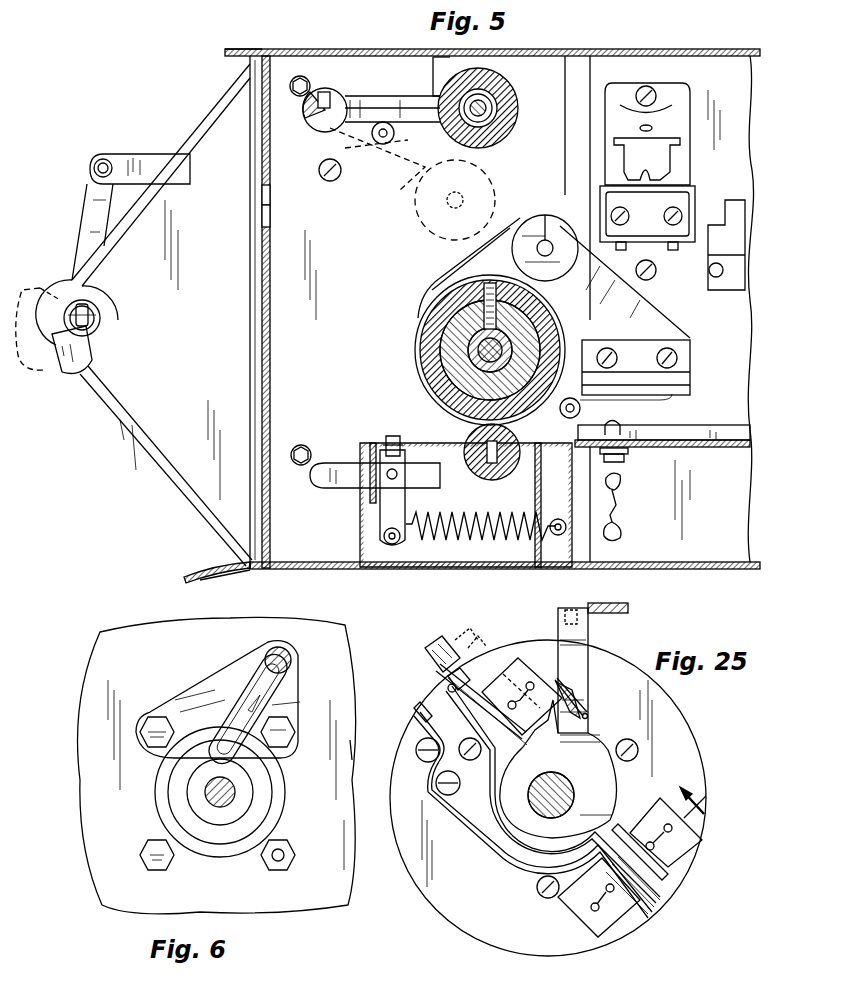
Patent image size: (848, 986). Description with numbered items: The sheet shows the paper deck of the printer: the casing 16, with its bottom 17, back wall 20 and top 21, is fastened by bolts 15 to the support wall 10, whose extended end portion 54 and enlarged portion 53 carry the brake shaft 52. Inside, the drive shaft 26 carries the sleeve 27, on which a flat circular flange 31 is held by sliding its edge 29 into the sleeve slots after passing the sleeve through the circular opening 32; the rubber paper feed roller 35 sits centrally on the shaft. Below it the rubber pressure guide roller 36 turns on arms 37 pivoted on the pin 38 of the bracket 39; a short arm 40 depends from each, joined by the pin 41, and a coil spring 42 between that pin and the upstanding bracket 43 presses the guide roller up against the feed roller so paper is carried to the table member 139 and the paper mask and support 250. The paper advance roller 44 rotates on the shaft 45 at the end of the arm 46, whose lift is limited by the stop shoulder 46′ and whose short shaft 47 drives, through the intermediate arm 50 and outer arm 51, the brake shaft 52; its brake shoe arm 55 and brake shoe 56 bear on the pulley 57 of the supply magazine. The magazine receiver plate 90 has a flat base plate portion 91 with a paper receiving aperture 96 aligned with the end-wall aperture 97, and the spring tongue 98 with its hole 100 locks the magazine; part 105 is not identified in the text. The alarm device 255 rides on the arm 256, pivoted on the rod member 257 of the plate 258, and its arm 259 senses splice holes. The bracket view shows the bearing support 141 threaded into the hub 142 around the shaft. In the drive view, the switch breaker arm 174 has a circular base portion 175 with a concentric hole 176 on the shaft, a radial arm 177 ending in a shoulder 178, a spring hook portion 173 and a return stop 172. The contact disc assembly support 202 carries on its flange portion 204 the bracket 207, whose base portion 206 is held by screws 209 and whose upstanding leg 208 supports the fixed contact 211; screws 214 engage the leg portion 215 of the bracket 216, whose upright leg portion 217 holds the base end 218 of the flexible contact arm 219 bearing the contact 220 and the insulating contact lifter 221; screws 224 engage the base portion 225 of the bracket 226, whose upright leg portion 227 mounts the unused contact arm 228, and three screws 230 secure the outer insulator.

In FIG. 5, the support wall 10 is at (160, 458).
In FIG. 5, the bolts 15 is at (304, 84).
In FIG. 5, the casing 16 is at (620, 50).
In FIG. 6, the casing 16 is at (72, 821).
In FIG. 5, the bottom 17 is at (690, 569).
In FIG. 5, the back wall 20 is at (337, 275).
In FIG. 6, the back wall 20 is at (352, 748).
In FIG. 5, the top 21 is at (688, 49).
In FIG. 5, the drive shaft 26 is at (466, 360).
In FIG. 6, the drive shaft 26 is at (205, 794).
In FIG. 25, the drive shaft 26 is at (574, 790).
In FIG. 5, the sleeve 27 is at (460, 368).
In FIG. 25, the sleeve 27 is at (453, 778).
In FIG. 5, the edge 29 is at (30, 40).
In FIG. 5, the flat circular flange 31 is at (415, 315).
In FIG. 5, the circular opening 32 is at (458, 400).
In FIG. 5, the rubber paper feed roller 35 is at (422, 348).
In FIG. 5, the rubber pressure guide roller 36 is at (512, 466).
In FIG. 5, the arms 37 is at (485, 484).
In FIG. 5, the pin 38 is at (399, 476).
In FIG. 5, the bracket 39 is at (404, 446).
In FIG. 5, the short arm 40 is at (388, 518).
In FIG. 5, the pin 41 is at (390, 546).
In FIG. 5, the coil spring 42 is at (460, 540).
In FIG. 5, the upstanding bracket 43 is at (556, 518).
In FIG. 5, the paper advance roller 44 is at (514, 116).
In FIG. 5, the shaft 45 is at (494, 100).
In FIG. 5, the arm 46 is at (385, 131).
In FIG. 5, the stop shoulder 46' is at (422, 74).
In FIG. 5, the short shaft 47 is at (322, 132).
In FIG. 5, the intermediate arm 50 is at (152, 156).
In FIG. 5, the outer arm 51 is at (88, 212).
In FIG. 5, the brake shaft 52 is at (100, 308).
In FIG. 5, the enlarged portion 53 is at (98, 300).
In FIG. 5, the extended end portion 54 is at (151, 413).
In FIG. 5, the brake shoe arm 55 is at (92, 322).
In FIG. 5, the brake shoe 56 is at (56, 356).
In FIG. 5, the pulley 57 is at (41, 312).
In FIG. 5, the magazine receiver plate 90 is at (262, 230).
In FIG. 5, the flat base plate portion 91 is at (262, 324).
In FIG. 5, the paper receiving aperture 96 is at (272, 222).
In FIG. 5, the aperture 97 is at (272, 203).
In FIG. 5, the spring tongue 98 is at (186, 581).
In FIG. 5, the hole 100 is at (238, 572).
In FIG. 5, the top wall 105 is at (250, 49).
In FIG. 5, the table member 139 is at (686, 442).
In FIG. 6, the adjustable outboard bearing support 141 is at (232, 836).
In FIG. 6, the hub 142 is at (206, 850).
In FIG. 25, the return stop 172 is at (614, 606).
In FIG. 25, the hook portion 173 is at (585, 712).
In FIG. 25, the switch breaker arm 174 is at (450, 632).
In FIG. 25, the circular base portion 175 is at (612, 790).
In FIG. 25, the concentric hole 176 is at (556, 772).
In FIG. 25, the arm 177 is at (602, 676).
In FIG. 25, the shoulder 178 is at (568, 608).
In FIG. 25, the contact disc assembly support 202 is at (694, 730).
In FIG. 25, the flange portion 204 is at (680, 720).
In FIG. 25, the base portion 206 is at (510, 656).
In FIG. 25, the bracket 207 is at (523, 658).
In FIG. 25, the upstanding leg 208 is at (528, 738).
In FIG. 25, the screws 209 is at (527, 698).
In FIG. 25, the fixed contact 211 is at (476, 670).
In FIG. 25, the screws 214 is at (667, 842).
In FIG. 25, the leg portion 215 is at (702, 840).
In FIG. 25, the bracket 216 is at (662, 798).
In FIG. 25, the upright leg portion 217 is at (664, 874).
In FIG. 25, the base end 218 is at (664, 828).
In FIG. 25, the flexible contact arm 219 is at (492, 818).
In FIG. 25, the contact 220 is at (450, 685).
In FIG. 25, the insulating contact lifter 221 is at (428, 650).
In FIG. 25, the screws 224 is at (599, 897).
In FIG. 25, the base portion 225 is at (634, 930).
In FIG. 25, the bracket 226 is at (642, 918).
In FIG. 25, the upright leg portion 227 is at (646, 904).
In FIG. 25, the contact arm 228 is at (510, 864).
In FIG. 25, the screws 230 is at (464, 742).
In FIG. 5, the paper mask and support 250 is at (730, 430).
In FIG. 5, the alarm device 255 is at (690, 361).
In FIG. 5, the arm 256 is at (650, 312).
In FIG. 5, the rod member 257 is at (542, 214).
In FIG. 6, the rod member 257 is at (292, 658).
In FIG. 5, the plate 258 is at (476, 262).
In FIG. 6, the plate 258 is at (220, 672).
In FIG. 5, the arm 259 is at (582, 404).